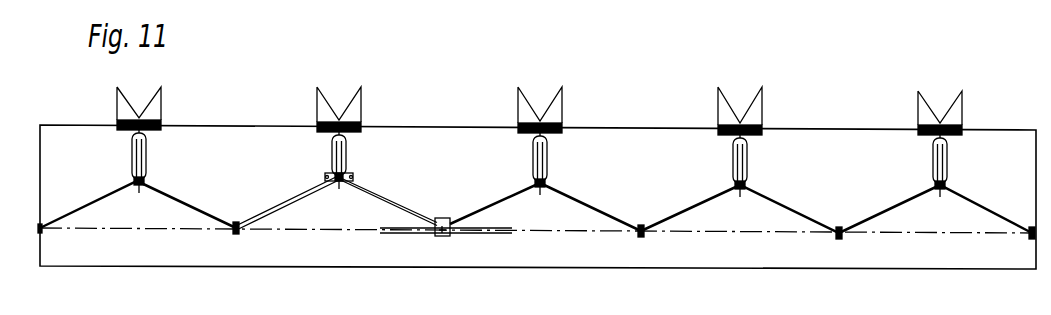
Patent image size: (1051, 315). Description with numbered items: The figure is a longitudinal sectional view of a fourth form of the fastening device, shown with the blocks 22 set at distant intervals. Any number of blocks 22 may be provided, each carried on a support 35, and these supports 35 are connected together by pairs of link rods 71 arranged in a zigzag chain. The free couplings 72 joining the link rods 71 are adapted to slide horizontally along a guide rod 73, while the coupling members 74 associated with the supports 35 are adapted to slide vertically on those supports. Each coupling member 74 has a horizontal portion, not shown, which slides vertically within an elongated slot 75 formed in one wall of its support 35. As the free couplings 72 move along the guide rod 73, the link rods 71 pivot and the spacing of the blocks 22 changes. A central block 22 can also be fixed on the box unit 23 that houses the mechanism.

The block 22 is at (153, 106).
The box unit 23 is at (837, 270).
The support 35 is at (146, 150).
The link rod 71 is at (63, 216).
The free coupling 72 is at (233, 235).
The guide rod 73 is at (391, 232).
The coupling member 74 is at (132, 180).
The elongated slot 75 is at (131, 152).